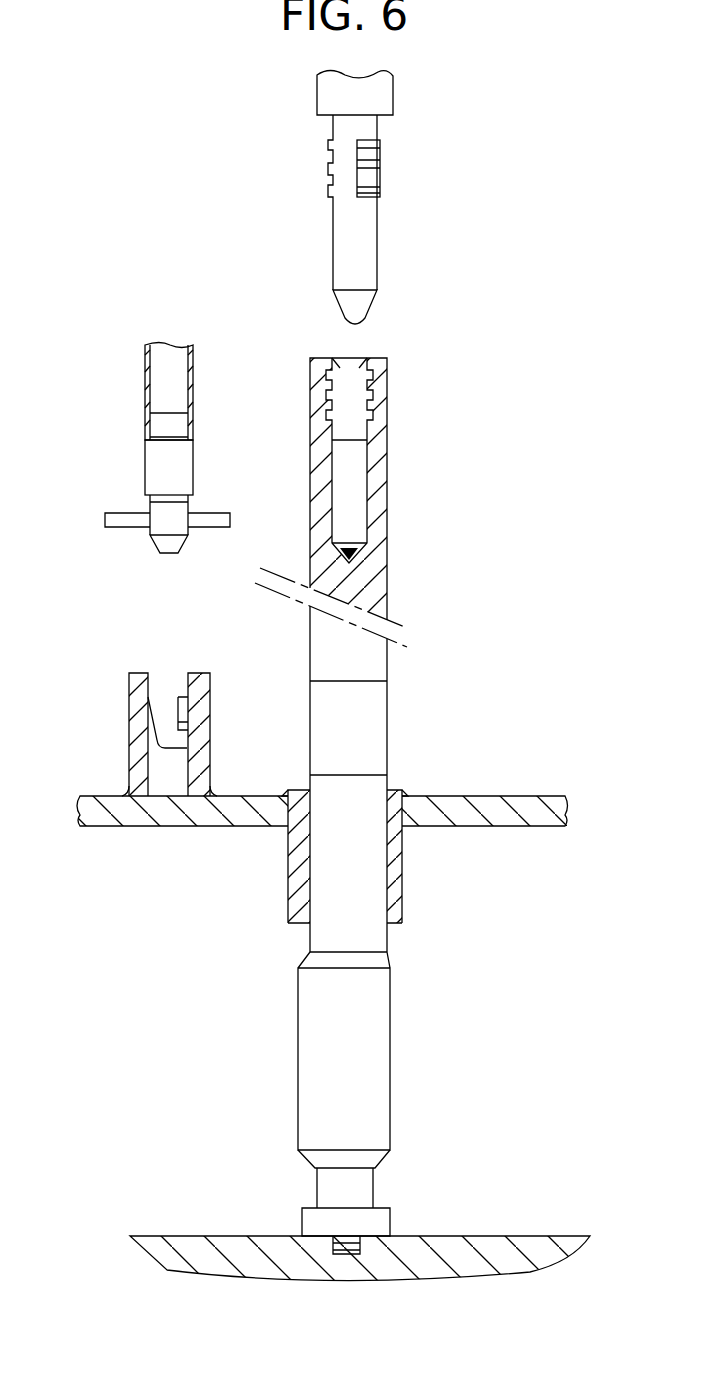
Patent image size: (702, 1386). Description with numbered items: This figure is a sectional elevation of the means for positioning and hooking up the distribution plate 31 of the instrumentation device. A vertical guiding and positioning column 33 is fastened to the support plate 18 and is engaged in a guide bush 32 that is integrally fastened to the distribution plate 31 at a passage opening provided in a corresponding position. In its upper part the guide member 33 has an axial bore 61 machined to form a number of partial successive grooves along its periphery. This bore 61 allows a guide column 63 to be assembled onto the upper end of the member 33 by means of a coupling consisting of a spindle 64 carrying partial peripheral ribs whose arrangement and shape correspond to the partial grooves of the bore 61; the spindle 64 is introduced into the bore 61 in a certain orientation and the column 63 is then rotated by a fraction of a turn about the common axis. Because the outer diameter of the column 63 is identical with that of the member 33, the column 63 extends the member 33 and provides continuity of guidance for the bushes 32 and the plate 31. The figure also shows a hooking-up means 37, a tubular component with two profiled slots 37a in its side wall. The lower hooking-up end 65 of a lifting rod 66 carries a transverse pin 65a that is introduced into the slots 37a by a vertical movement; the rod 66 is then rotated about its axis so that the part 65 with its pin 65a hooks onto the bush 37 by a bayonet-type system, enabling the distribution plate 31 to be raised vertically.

The guide column 63 is at (383, 97).
The spindle 64 is at (368, 196).
The lifting rod 66 is at (161, 368).
The lower hooking-up end 65 is at (152, 480).
The transverse pin 65a is at (121, 522).
The axial bore 61 is at (358, 470).
The guiding and positioning column 33 is at (372, 712).
The guide bush 32 is at (404, 888).
The distribution plate 31 is at (514, 812).
The hooking-up means 37 is at (129, 718).
The profiled slot 37a is at (175, 700).
The support plate 18 is at (490, 1250).